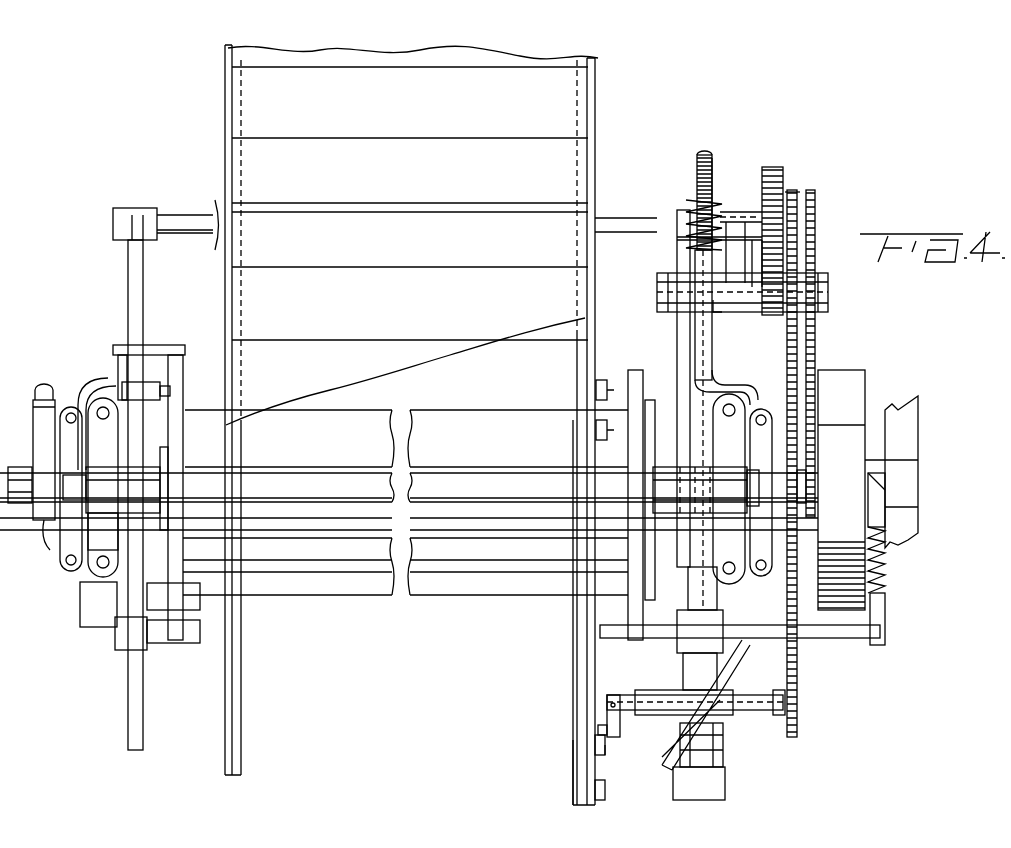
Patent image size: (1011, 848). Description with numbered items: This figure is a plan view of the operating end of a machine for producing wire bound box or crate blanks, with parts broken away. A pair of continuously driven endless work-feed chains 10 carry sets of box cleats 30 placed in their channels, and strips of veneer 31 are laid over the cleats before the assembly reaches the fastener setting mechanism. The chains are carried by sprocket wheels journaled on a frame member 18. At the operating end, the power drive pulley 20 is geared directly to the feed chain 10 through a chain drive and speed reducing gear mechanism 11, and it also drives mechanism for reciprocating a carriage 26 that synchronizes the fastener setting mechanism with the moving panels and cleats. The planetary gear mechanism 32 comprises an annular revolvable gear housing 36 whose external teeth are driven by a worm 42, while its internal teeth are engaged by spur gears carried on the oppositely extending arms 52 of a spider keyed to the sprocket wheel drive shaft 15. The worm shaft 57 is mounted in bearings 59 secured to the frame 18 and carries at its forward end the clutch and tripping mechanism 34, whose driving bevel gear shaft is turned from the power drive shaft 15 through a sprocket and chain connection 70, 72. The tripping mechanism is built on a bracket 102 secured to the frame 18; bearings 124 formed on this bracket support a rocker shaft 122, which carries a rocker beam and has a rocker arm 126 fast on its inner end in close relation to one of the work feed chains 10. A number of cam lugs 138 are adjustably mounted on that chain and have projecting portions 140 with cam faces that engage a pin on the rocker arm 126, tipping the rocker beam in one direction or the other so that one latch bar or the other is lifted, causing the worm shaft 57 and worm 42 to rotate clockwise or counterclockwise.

The work-feed chain 10 is at (235, 647).
The chain drive and speed reducing gear mechanism 11 is at (812, 205).
The sprocket wheel drive shaft 15 is at (630, 236).
The frame member 18 is at (143, 308).
The power drive pulley 20 is at (855, 383).
The carriage 26 is at (183, 400).
The box cleat 30 is at (233, 690).
The strip of veneer 31 is at (565, 102).
The planetary gear mechanism 32 is at (695, 172).
The clutch and tripping mechanism 34 is at (727, 752).
The gear housing 36 is at (712, 168).
The worm 42 is at (690, 206).
The arm of the spider 52 is at (672, 242).
The worm shaft 57 is at (705, 340).
The bearing 59 is at (717, 597).
The sprocket 70 is at (790, 200).
The chain 72 is at (790, 330).
The bracket 102 is at (678, 645).
The rocker shaft 122 is at (628, 712).
The bearing 124 is at (655, 676).
The rocker arm 126 is at (607, 718).
The cam lug 138 is at (573, 758).
The projecting portion 140 is at (600, 742).